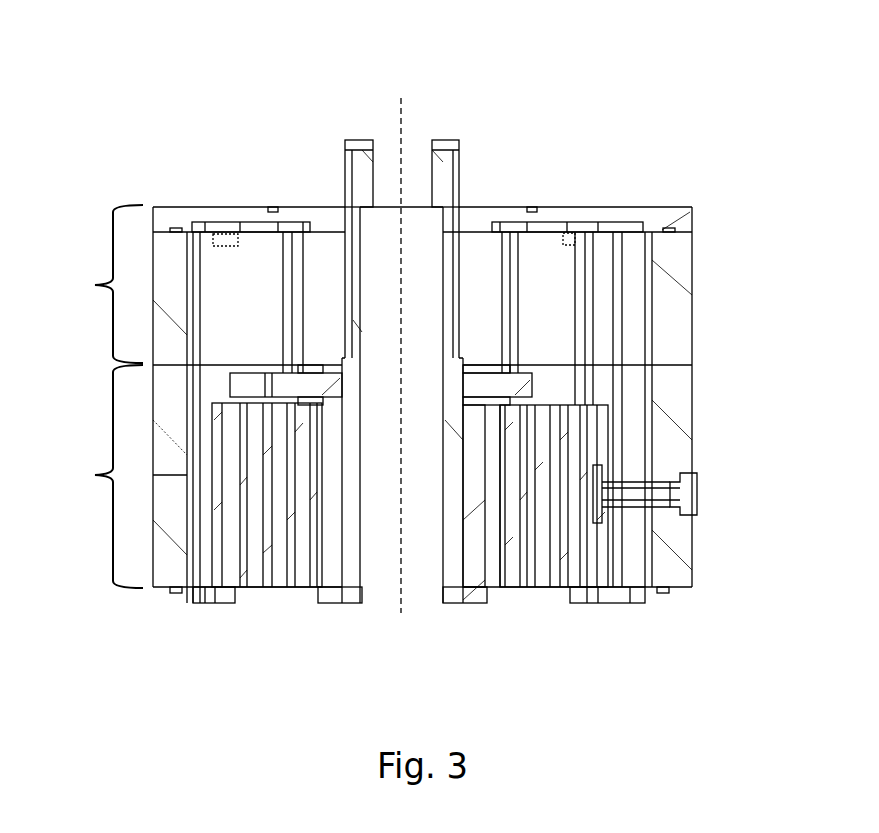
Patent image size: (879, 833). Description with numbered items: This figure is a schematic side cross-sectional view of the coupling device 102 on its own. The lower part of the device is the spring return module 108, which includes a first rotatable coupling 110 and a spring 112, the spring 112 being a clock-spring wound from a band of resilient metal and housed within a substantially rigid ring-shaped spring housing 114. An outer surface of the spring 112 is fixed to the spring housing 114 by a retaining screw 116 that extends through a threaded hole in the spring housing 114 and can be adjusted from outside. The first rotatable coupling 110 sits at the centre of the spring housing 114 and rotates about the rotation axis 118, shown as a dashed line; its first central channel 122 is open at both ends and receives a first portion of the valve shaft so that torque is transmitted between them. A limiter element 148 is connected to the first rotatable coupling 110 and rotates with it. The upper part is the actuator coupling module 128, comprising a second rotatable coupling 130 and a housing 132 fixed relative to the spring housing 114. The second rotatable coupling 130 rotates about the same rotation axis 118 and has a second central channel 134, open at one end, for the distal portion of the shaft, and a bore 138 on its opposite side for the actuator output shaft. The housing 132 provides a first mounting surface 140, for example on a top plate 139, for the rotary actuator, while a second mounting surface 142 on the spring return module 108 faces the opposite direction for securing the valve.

The coupling device 102 is at (136, 97).
The spring return module 108 is at (182, 476).
The first rotatable coupling 110 is at (455, 572).
The spring 112 is at (287, 540).
The spring housing 114 is at (692, 425).
The retaining screw 116 is at (703, 515).
The rotation axis 118 is at (402, 107).
The first central channel 122 is at (380, 601).
The actuator coupling module 128 is at (185, 289).
The second rotatable coupling 130 is at (358, 178).
The housing 132 is at (692, 295).
The second central channel 134 is at (425, 293).
The bore 138 is at (387, 145).
The top plate 139 is at (692, 220).
The first mounting surface 140 is at (555, 205).
The second mounting surface 142 is at (607, 605).
The limiter element 148 is at (258, 378).